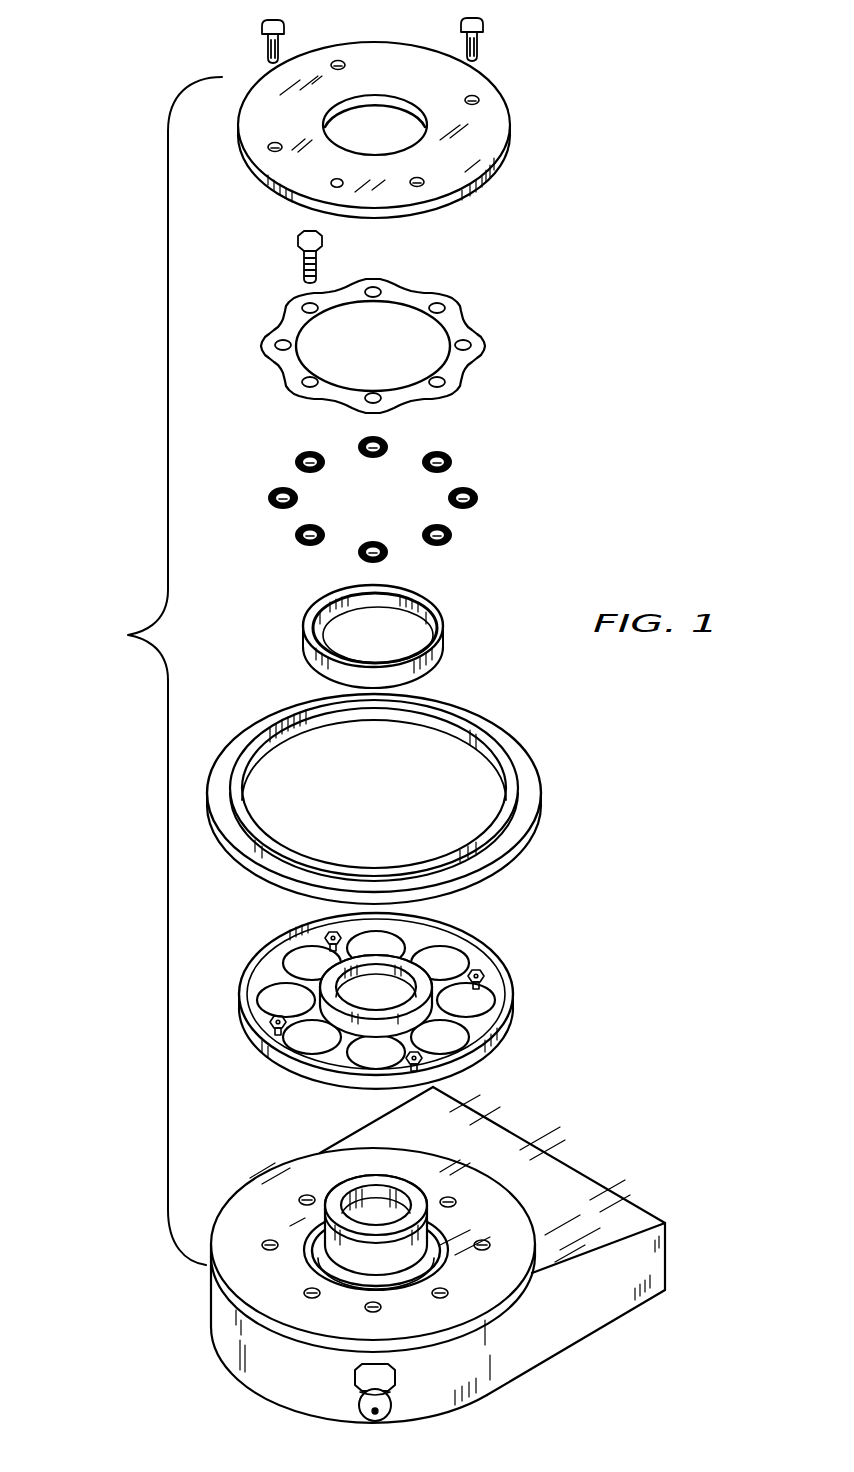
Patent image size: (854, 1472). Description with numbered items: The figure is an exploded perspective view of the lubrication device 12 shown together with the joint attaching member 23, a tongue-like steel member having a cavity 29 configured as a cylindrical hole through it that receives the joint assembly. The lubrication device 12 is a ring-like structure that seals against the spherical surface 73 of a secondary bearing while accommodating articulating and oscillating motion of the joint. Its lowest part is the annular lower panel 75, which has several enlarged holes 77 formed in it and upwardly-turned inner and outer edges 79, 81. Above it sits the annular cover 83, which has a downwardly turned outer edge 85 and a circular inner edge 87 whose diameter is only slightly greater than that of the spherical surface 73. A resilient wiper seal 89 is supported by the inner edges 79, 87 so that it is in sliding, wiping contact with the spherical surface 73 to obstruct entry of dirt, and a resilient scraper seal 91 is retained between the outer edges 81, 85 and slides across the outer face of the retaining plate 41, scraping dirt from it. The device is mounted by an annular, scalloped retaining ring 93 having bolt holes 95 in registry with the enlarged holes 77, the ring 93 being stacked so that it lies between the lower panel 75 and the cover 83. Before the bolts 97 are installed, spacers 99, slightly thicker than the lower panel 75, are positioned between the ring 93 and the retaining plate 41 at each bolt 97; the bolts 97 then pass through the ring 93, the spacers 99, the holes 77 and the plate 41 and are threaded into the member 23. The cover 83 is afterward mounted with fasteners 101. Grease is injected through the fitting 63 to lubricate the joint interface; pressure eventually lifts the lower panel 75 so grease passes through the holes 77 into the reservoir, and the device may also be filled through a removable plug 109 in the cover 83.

The lubrication device 12 is at (153, 671).
The second attachment member 23 is at (528, 1138).
The cavity 29 is at (305, 1244).
The retaining plate 41 is at (523, 1208).
The fitting 63 is at (397, 1383).
The spherical surface 73 is at (312, 1272).
The lower panel 75 is at (512, 990).
The enlarged holes 77 is at (470, 1007).
The inner edge 79 is at (410, 958).
The outer edge 81 is at (494, 958).
The cover 83 is at (467, 167).
The outer edge 85 is at (463, 170).
The inner edge 87 is at (412, 104).
The wiper seal 89 is at (443, 640).
The scraper seal 91 is at (528, 787).
The retaining ring 93 is at (487, 345).
The bolt holes 95 is at (445, 304).
The bolts 97 is at (323, 258).
The spacers 99 is at (479, 493).
The fasteners 101 is at (262, 44).
The removable plug 109 is at (342, 186).